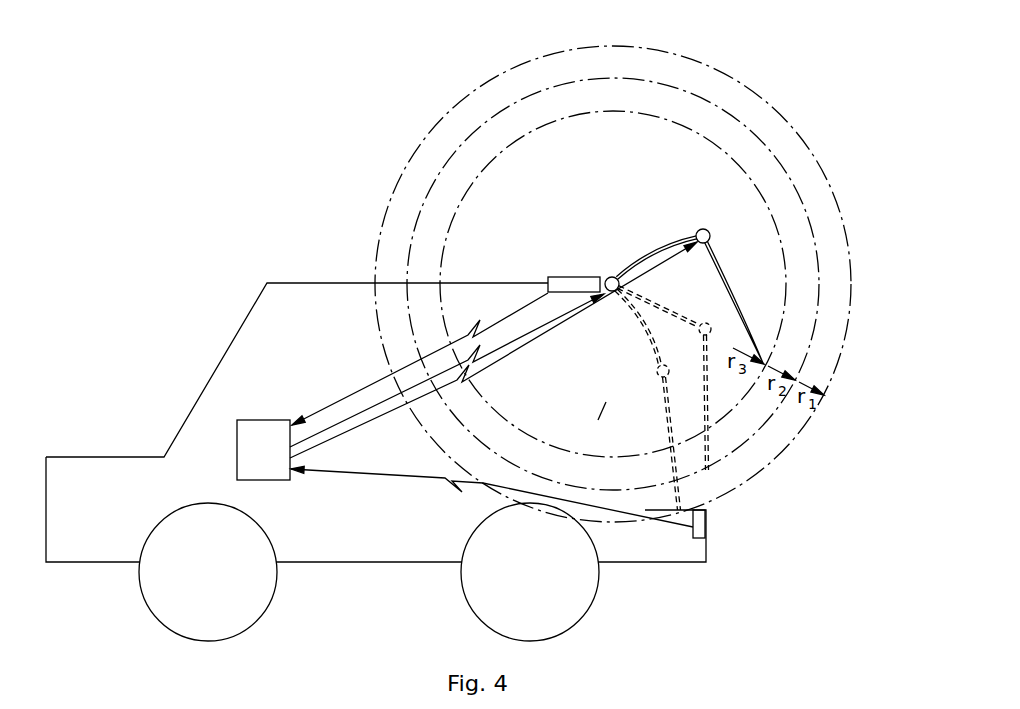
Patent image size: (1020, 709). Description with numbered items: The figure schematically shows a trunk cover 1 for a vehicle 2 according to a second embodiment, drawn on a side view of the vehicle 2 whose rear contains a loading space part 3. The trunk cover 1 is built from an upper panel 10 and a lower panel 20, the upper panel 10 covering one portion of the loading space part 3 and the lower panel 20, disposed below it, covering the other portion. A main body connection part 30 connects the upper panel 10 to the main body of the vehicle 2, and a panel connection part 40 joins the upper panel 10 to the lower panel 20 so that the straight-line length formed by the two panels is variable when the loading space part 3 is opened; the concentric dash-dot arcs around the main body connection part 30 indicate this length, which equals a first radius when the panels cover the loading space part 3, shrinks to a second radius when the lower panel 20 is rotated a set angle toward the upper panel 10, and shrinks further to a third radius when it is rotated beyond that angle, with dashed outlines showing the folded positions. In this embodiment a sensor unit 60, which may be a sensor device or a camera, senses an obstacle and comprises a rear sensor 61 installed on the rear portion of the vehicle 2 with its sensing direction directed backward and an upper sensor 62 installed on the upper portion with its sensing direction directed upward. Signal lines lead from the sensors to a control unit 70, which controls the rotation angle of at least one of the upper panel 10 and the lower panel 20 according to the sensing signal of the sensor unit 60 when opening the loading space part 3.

The trunk cover 1 is at (734, 290).
The vehicle 2 is at (297, 283).
The loading space part 3 is at (600, 418).
The upper panel 10 is at (670, 243).
The lower panel 20 is at (741, 303).
The main body connection part 30 is at (610, 277).
The panel connection part 40 is at (708, 228).
The sensor unit 60 is at (565, 277).
The rear sensor 61 is at (705, 531).
The upper sensor 62 is at (536, 252).
The control unit 70 is at (248, 435).